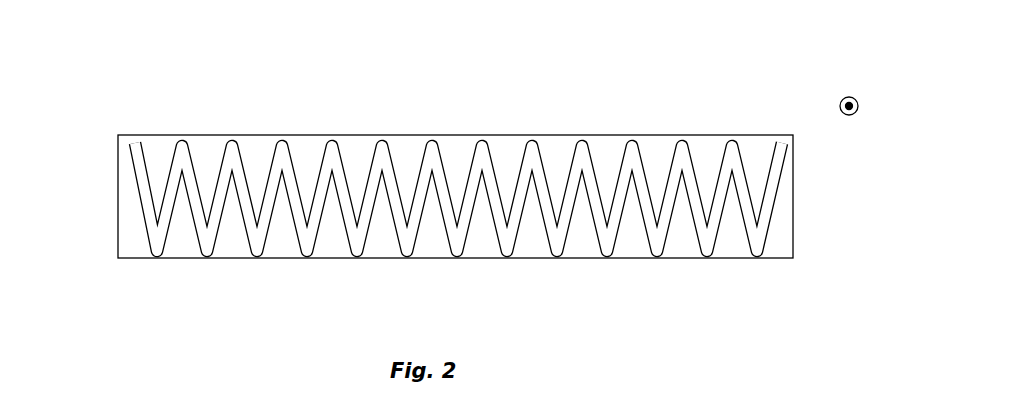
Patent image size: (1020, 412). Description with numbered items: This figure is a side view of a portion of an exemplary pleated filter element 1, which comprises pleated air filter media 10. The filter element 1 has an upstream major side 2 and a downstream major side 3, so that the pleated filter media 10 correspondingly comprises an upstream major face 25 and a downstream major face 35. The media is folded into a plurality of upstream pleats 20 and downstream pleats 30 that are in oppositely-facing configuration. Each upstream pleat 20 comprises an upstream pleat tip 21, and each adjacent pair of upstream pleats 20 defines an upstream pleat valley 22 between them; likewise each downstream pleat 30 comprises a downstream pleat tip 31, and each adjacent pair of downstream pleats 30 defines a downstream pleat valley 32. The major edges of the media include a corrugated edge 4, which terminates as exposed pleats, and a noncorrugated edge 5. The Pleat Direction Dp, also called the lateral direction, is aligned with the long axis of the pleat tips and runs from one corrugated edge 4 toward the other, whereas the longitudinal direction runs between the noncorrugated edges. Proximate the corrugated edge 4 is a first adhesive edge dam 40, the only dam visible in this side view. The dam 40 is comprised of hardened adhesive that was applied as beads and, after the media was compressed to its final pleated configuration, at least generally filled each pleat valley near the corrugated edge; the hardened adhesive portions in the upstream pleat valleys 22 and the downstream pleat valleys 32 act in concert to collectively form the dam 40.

The pleated filter element 1 is at (763, 55).
The upstream major side 2 is at (400, 283).
The downstream major side 3 is at (630, 113).
The corrugated edge 4 is at (698, 228).
The noncorrugated edge 5 is at (784, 148).
The pleated filter media 10 is at (377, 150).
The upstream pleat 20 is at (607, 248).
The upstream pleat tip 21 is at (507, 257).
The upstream pleat valley 22 is at (230, 218).
The upstream major face 25 is at (557, 255).
The downstream pleat 30 is at (583, 147).
The downstream pleat tip 31 is at (432, 139).
The downstream pleat valley 32 is at (205, 172).
The downstream major face 35 is at (482, 139).
The first adhesive edge dam 40 is at (305, 152).
The Pleat Direction Dp is at (850, 97).